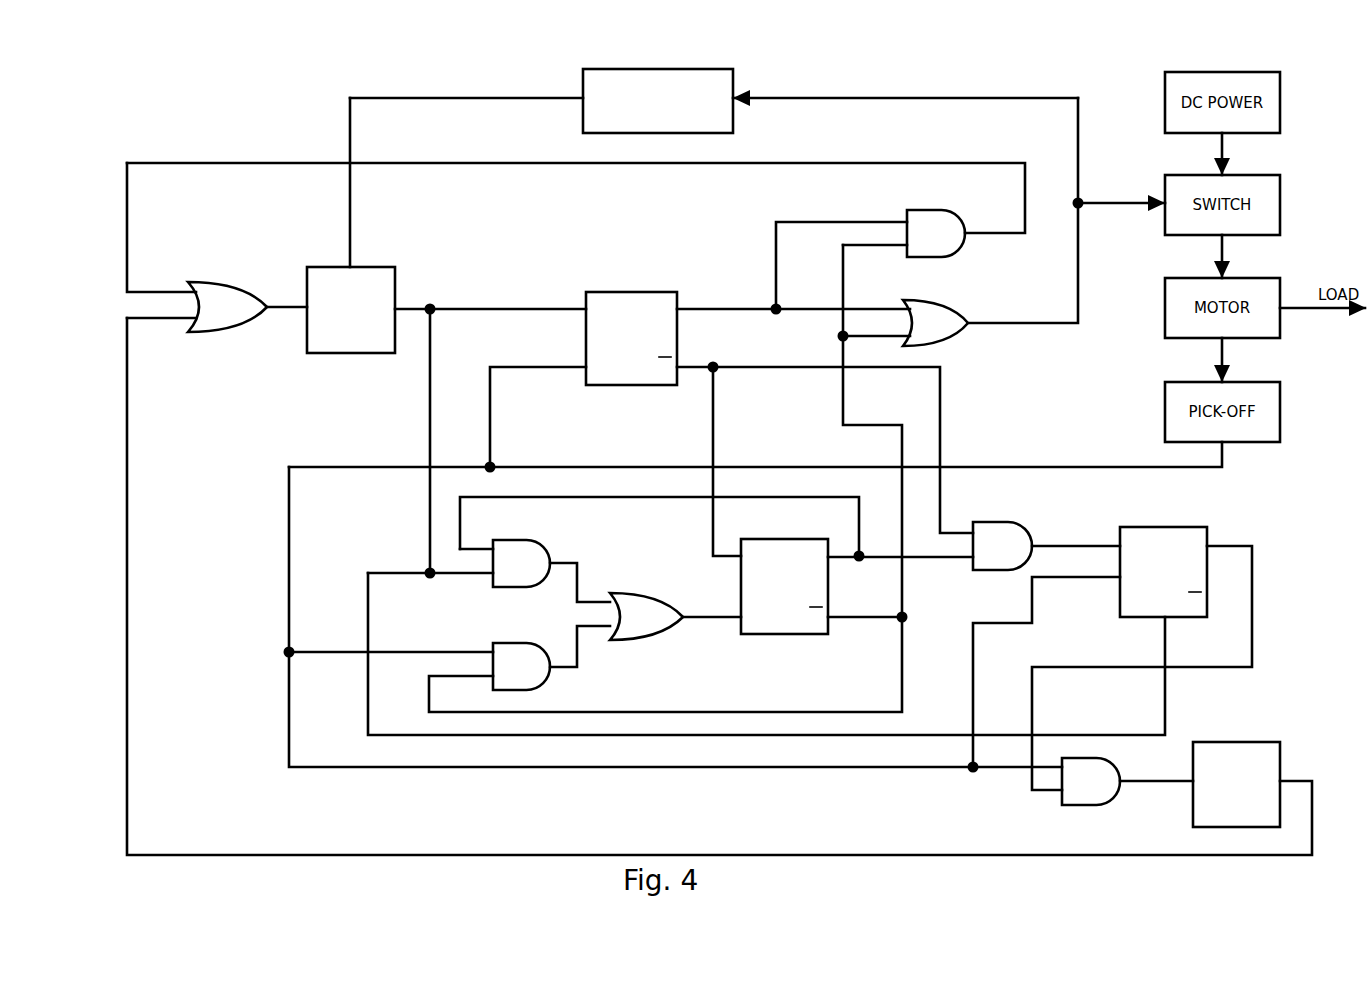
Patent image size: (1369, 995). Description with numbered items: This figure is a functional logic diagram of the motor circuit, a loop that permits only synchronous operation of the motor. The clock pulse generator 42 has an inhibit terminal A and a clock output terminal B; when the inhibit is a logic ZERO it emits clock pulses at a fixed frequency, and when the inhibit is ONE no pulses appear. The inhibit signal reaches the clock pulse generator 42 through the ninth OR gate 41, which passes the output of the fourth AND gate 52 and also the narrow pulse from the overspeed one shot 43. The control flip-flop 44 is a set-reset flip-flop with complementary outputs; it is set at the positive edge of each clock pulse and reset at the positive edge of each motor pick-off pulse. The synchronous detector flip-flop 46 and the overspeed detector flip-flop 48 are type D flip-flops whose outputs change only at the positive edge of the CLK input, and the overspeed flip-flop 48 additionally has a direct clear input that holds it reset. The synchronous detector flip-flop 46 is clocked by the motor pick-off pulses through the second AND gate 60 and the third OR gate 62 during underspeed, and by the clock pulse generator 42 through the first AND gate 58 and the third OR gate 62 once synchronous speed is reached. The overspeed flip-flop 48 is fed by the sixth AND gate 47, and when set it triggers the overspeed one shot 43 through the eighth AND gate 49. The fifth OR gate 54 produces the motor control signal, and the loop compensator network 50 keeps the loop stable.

The OR gate G9 41 is at (246, 290).
The clock pulse generator 42 is at (397, 268).
The overspeed one shot 43 is at (1263, 745).
The control flip-flop 44 is at (656, 298).
The synchronous detector flip-flop 46 is at (806, 546).
The AND gate G6 47 is at (1030, 537).
The overspeed detector flip-flop 48 is at (1182, 527).
The AND gate G8 49 is at (1122, 781).
The loop compensator network 50 is at (664, 69).
The AND gate G4 52 is at (971, 226).
The OR gate G5 54 is at (976, 320).
The AND gate G1 58 is at (553, 552).
The AND gate G2 60 is at (551, 655).
The OR gate G3 62 is at (684, 611).